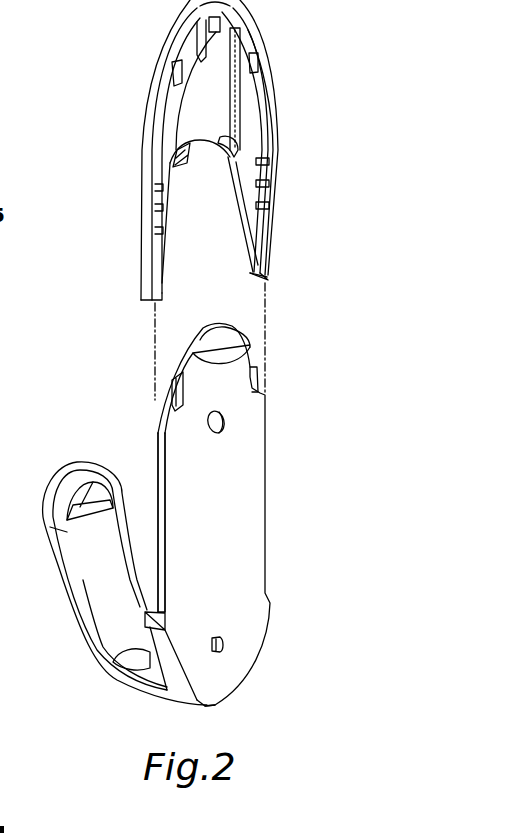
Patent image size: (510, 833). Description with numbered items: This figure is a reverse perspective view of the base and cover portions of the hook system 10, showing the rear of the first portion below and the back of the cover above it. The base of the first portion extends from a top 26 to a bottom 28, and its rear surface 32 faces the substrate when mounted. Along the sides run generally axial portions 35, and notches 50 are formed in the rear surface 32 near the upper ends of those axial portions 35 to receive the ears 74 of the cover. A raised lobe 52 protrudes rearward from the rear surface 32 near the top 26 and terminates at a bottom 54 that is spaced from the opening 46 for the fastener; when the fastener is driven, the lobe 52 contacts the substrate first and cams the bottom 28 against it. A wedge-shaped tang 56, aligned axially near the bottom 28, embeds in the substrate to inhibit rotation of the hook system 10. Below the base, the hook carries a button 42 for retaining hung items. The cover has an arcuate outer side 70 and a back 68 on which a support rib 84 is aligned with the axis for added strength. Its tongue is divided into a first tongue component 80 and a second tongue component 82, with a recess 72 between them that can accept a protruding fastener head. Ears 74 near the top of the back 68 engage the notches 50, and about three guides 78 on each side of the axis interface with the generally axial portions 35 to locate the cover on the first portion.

The hook system 10 is at (128, 318).
The top 26 is at (222, 323).
The bottom 28 is at (211, 708).
The rear surface 32 is at (226, 510).
The generally axial portion 35 is at (158, 450).
The button 42 is at (93, 484).
The opening 46 is at (226, 424).
The notch 50 is at (172, 397).
The raised lobe 52 is at (232, 338).
The bottom 54 is at (232, 358).
The tang 56 is at (224, 650).
The back 68 is at (243, 106).
The outer side 70 is at (174, 33).
The recess 72 is at (196, 127).
The ear 74 is at (178, 84).
The guide 78 is at (158, 231).
The first tongue component 80 is at (240, 218).
The second tongue component 82 is at (170, 237).
The support rib 84 is at (200, 36).